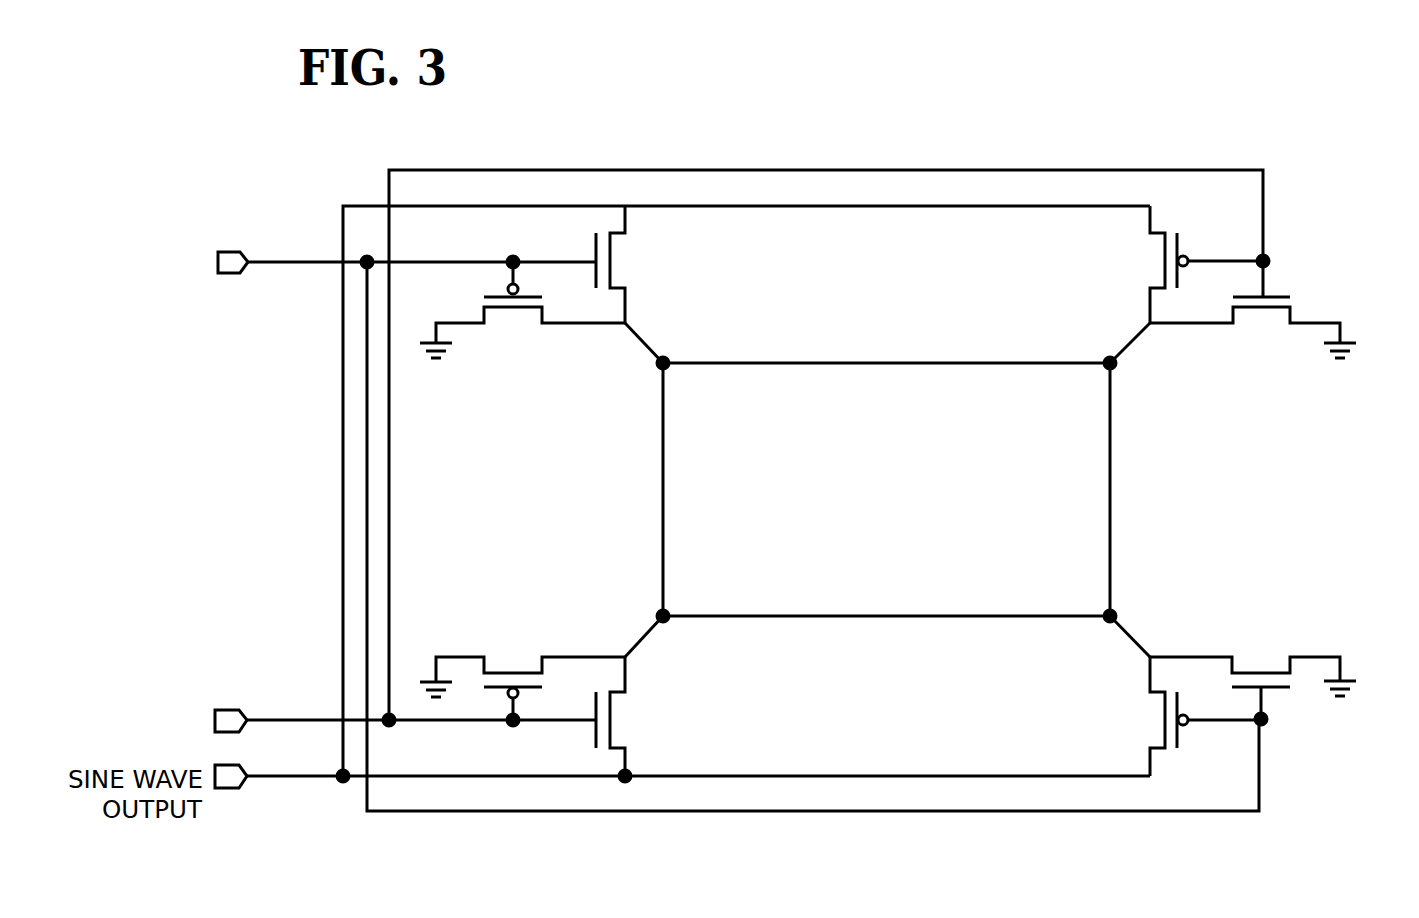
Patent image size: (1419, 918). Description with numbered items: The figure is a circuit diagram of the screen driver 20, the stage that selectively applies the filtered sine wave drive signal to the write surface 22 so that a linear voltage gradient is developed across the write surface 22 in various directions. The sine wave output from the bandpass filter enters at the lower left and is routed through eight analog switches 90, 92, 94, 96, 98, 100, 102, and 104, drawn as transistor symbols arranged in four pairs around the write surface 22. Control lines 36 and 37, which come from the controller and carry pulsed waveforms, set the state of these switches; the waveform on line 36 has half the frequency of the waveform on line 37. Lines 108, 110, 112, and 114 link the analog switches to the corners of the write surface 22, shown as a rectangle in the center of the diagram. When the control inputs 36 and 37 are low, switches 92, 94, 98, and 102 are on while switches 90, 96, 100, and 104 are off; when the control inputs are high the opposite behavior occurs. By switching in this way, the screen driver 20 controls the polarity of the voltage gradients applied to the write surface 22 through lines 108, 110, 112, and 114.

The screen driver 20 is at (836, 72).
The write surface 22 is at (900, 362).
The control line 36 is at (305, 265).
The control line 37 is at (300, 718).
The analog switch 90 is at (636, 270).
The analog switch 92 is at (512, 310).
The analog switch 94 is at (513, 670).
The analog switch 96 is at (630, 722).
The analog switch 98 is at (1160, 722).
The analog switch 100 is at (1255, 673).
The analog switch 102 is at (1160, 262).
The analog switch 104 is at (1260, 310).
The line 108 is at (641, 340).
The line 110 is at (641, 645).
The line 112 is at (1132, 645).
The line 114 is at (1133, 340).